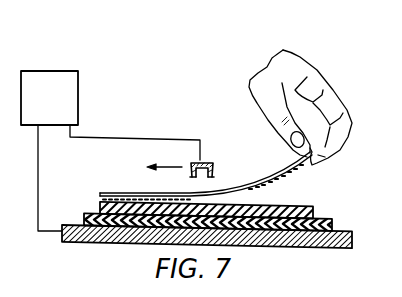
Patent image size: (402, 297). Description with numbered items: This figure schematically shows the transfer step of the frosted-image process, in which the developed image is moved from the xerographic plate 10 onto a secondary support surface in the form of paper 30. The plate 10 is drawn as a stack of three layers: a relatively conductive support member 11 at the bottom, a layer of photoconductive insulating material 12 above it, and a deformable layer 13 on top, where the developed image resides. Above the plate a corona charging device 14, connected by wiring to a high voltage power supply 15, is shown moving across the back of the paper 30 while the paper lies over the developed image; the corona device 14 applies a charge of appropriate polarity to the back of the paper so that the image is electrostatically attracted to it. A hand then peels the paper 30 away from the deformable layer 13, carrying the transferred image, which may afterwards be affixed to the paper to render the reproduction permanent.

The xerographic plate 10 is at (93, 252).
The support member 11 is at (345, 230).
The layer of photoconductive insulating material 12 is at (328, 218).
The deformable layer 13 is at (307, 206).
The corona charging device 14 is at (208, 161).
The high voltage power supply 15 is at (43, 71).
The paper 30 is at (288, 166).